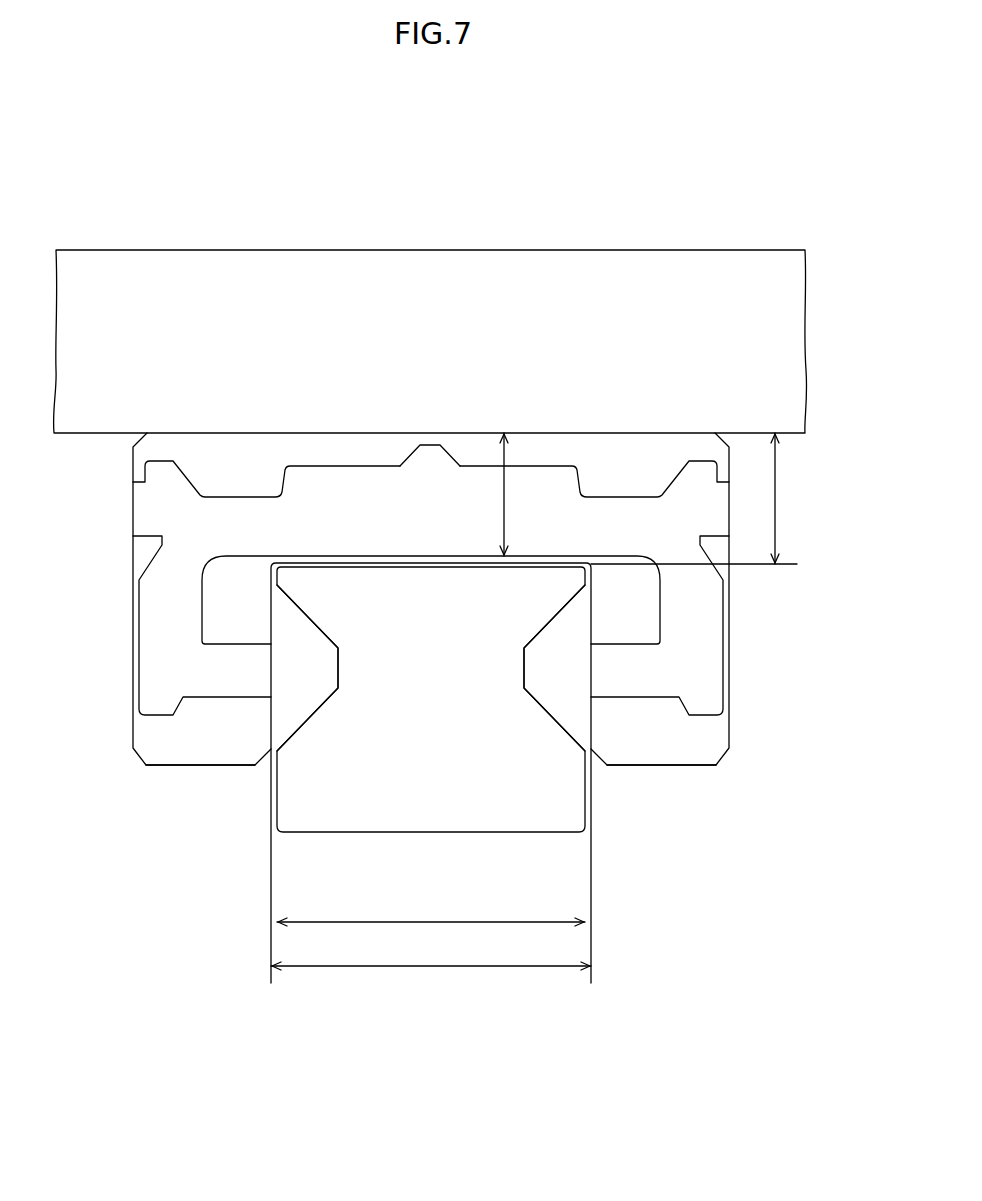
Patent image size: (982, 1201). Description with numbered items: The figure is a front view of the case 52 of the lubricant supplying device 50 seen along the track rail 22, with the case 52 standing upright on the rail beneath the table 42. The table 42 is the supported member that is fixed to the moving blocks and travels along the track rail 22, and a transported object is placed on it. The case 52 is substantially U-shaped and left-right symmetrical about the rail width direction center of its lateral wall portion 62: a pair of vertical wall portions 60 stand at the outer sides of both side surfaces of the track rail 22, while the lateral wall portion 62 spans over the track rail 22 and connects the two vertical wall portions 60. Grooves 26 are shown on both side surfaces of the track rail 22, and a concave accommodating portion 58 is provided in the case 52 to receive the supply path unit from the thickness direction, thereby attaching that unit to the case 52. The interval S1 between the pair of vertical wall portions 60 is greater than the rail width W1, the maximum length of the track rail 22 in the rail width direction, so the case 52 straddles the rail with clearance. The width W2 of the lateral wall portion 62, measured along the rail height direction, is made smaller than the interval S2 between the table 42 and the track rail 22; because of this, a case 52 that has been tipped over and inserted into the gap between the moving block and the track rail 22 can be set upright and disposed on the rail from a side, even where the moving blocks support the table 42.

The track rail 22 is at (431, 741).
The rail groove 26 is at (326, 663).
The table 42 is at (640, 249).
The lubricant supplying device 50 is at (500, 667).
The case 52 is at (500, 667).
The accommodating portion 58 is at (334, 477).
The vertical wall portions 60 is at (185, 766).
The lateral wall portion 62 is at (414, 433).
The rail width W1 is at (415, 920).
The width of the lateral wall portion W2 is at (506, 505).
The interval between the pair of vertical wall portions S1 is at (440, 964).
The interval between the table and the track rail S2 is at (778, 498).